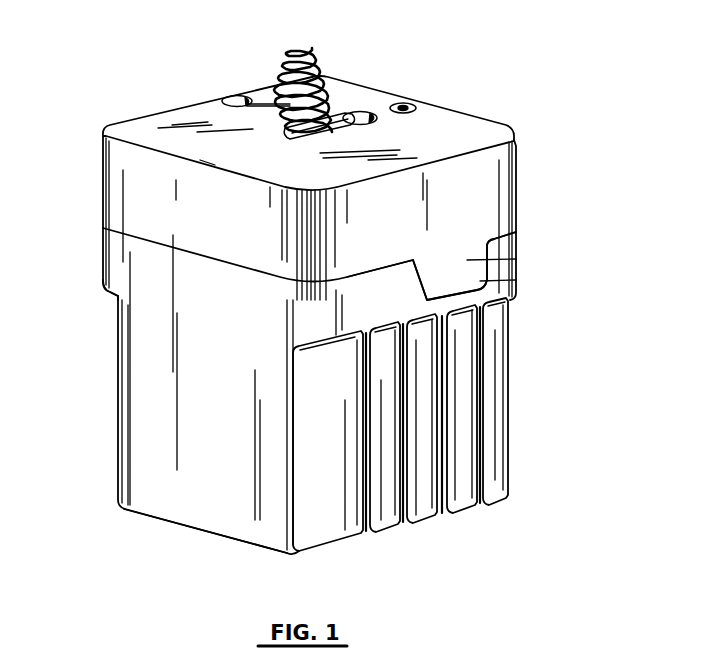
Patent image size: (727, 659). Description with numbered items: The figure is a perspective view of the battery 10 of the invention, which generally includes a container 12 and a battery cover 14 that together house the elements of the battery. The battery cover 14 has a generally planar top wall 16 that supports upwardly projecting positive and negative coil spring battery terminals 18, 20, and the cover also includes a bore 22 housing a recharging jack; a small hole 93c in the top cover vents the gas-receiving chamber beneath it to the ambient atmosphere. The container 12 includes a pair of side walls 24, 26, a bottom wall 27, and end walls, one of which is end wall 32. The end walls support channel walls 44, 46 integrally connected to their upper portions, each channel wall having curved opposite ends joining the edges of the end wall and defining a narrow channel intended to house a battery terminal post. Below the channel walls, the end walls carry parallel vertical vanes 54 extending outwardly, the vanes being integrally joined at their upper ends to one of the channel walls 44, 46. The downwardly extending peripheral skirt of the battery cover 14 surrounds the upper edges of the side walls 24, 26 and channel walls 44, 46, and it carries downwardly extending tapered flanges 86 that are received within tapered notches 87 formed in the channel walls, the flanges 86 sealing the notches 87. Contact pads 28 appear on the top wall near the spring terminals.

The battery 10 is at (556, 211).
The container 12 is at (120, 366).
The battery cover 14 is at (98, 187).
The top wall 16 is at (490, 130).
The positive coil spring battery terminal 18 is at (298, 46).
The negative coil spring battery terminal 20 is at (332, 122).
The bore 22 is at (415, 102).
The side wall 24 is at (173, 423).
The side wall 26 is at (508, 396).
The bottom wall 27 is at (221, 535).
The contact pad 28 is at (231, 96).
The end wall 32 is at (310, 532).
The channel wall 44 is at (100, 253).
The channel wall 46 is at (378, 298).
The vertical vanes 54 is at (445, 520).
The tapered flange 86 is at (467, 263).
The tapered notch 87 is at (480, 281).
The small hole 93c is at (210, 162).